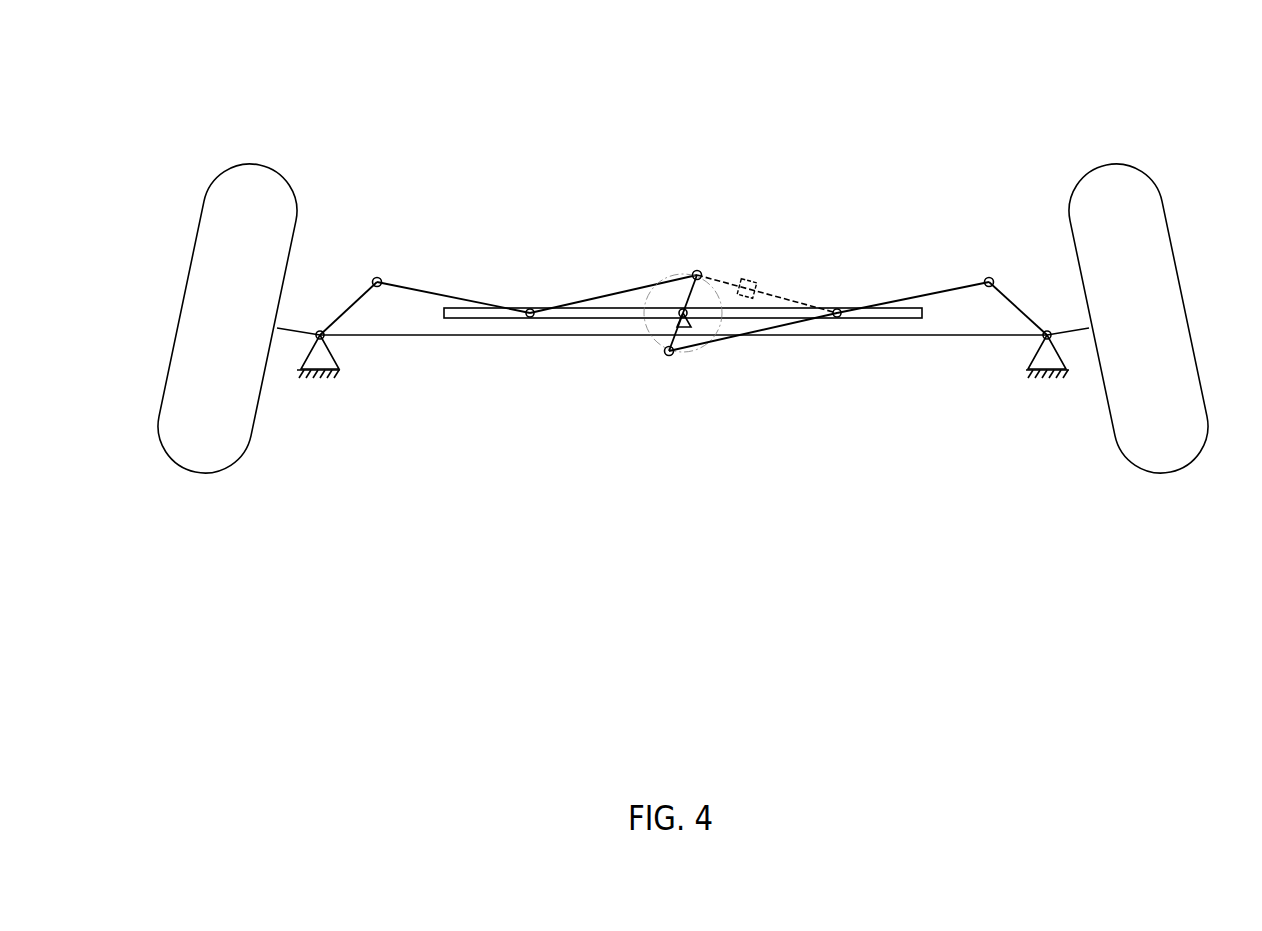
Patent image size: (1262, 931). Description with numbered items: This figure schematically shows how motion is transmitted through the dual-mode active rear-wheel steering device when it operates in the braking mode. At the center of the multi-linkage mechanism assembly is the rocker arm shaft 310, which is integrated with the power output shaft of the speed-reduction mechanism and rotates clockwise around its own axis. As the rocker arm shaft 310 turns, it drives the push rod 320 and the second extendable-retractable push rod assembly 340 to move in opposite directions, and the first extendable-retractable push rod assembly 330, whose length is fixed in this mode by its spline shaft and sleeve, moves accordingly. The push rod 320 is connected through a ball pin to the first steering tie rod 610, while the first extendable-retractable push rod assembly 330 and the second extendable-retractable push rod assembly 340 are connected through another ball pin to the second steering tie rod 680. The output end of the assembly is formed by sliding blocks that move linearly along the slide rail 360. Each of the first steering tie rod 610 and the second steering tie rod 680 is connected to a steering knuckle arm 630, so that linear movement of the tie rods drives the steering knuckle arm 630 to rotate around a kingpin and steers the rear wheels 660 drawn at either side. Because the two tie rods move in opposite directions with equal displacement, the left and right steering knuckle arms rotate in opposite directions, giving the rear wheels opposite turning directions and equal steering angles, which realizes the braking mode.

The rocker arm shaft 310 is at (683, 313).
The push rod 320 is at (593, 297).
The first extendable-retractable push rod assembly 330 is at (768, 293).
The second extendable-retractable push rod assembly 340 is at (773, 317).
The slide rail 360 is at (812, 319).
The first steering tie rod 610 is at (435, 292).
The steering knuckle arm 630 is at (357, 299).
The wheel 660 is at (253, 207).
The second steering tie rod 680 is at (923, 295).